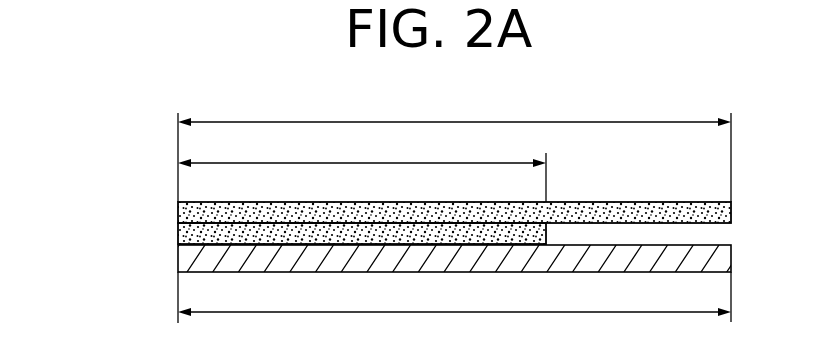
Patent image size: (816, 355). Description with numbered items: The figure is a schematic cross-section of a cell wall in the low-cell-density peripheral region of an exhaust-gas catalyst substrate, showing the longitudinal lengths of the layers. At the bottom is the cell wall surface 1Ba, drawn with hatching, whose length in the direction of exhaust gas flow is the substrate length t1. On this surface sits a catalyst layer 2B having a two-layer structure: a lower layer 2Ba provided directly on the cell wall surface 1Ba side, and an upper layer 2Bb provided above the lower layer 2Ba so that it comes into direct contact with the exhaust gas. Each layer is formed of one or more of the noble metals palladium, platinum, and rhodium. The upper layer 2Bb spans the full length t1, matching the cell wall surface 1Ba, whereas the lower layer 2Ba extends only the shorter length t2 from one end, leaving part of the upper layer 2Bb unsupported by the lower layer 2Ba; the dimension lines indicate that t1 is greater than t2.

The catalyst layer 2B is at (384, 214).
The upper layer 2Bb is at (178, 213).
The lower layer 2Ba is at (178, 233).
The cell wall surface 1Ba is at (186, 256).
The length of the substrate in the longitudinal direction t1 is at (454, 206).
The length of the lower layer t2 is at (362, 169).